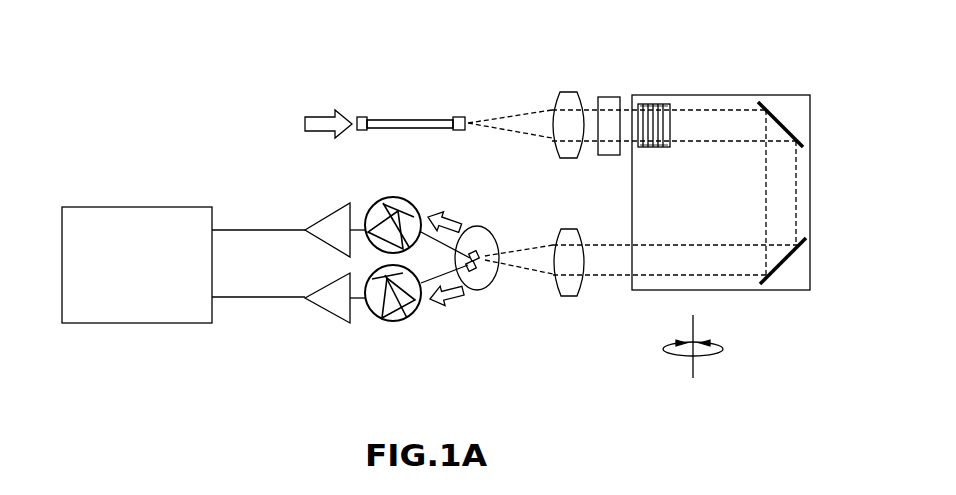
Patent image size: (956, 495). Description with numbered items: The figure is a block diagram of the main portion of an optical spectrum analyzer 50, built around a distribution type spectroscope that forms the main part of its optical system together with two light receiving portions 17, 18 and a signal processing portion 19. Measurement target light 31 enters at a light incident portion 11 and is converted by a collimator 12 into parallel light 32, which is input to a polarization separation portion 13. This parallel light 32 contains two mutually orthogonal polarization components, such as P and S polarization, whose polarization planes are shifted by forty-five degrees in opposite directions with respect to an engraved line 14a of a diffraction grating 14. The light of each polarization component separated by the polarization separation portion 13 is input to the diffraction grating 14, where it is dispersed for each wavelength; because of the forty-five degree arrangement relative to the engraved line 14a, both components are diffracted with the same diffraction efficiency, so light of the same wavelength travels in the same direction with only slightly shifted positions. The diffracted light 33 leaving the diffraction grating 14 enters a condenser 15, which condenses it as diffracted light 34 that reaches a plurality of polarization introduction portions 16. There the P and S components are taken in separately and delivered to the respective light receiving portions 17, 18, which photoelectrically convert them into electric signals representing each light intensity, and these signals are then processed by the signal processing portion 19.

The measurement target light 31 is at (322, 117).
The light incident portion 11 is at (361, 118).
The collimator 12 is at (568, 92).
The parallel light 32 is at (590, 117).
The polarization separation portion 13 is at (610, 97).
The diffraction grating 14 is at (747, 95).
The engraved line 14a is at (671, 128).
The diffracted light 33 is at (613, 268).
The condenser 15 is at (568, 297).
The diffracted light 34 is at (537, 263).
The polarization introduction portions 16 is at (487, 290).
The light receiving portion 17 is at (377, 319).
The light receiving portion 18 is at (373, 204).
The signal processing portion 19 is at (173, 206).
The optical spectrum analyzer 50 is at (266, 367).